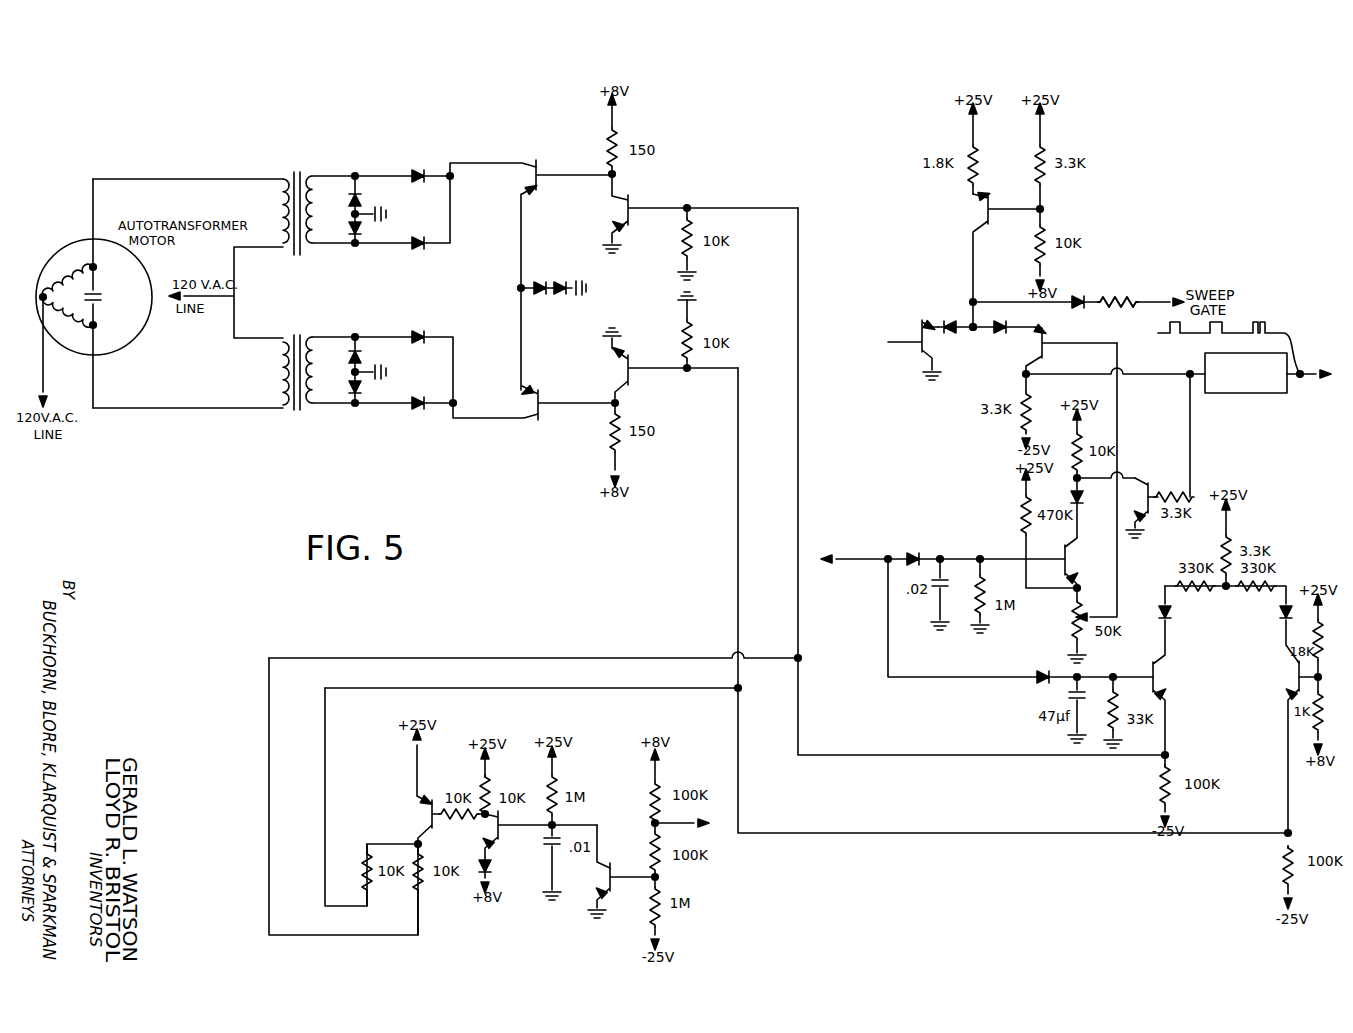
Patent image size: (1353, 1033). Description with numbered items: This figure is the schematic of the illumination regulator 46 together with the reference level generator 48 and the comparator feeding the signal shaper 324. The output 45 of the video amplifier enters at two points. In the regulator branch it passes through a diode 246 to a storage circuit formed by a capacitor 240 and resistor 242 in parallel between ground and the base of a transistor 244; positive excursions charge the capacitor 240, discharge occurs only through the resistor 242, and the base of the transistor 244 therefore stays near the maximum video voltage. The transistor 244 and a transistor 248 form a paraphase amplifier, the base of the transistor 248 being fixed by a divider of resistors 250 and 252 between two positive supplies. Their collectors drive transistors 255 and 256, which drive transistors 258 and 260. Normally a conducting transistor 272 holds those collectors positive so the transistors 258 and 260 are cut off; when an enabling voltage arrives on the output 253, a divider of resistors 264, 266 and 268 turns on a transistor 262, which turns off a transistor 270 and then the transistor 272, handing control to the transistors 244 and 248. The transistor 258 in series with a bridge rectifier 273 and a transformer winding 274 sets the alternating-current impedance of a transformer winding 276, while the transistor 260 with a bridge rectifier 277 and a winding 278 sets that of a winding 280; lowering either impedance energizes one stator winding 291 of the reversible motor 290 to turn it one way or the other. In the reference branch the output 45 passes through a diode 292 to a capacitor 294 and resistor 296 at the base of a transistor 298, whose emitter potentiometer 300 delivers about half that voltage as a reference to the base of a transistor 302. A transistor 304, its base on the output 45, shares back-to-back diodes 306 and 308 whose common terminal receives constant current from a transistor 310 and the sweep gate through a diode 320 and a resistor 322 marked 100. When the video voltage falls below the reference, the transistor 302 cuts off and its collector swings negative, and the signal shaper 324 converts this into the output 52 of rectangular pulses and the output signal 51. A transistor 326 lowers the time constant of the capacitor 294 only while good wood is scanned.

The motor 290 is at (42, 280).
The stator winding 291 is at (72, 270).
The transformer winding 276 is at (279, 192).
The transformer winding 280 is at (279, 374).
The bridge rectifier 273 is at (318, 245).
The transformer winding 274 is at (314, 208).
The bridge rectifier 277 is at (318, 405).
The transformer winding 278 is at (314, 372).
The transistor 258 is at (540, 167).
The transistor 260 is at (542, 412).
The transistor 255 is at (620, 209).
The transistor 256 is at (620, 372).
The transistor 272 is at (428, 812).
The transistor 270 is at (494, 831).
The transistor 262 is at (605, 878).
The resistor 264 is at (656, 792).
The resistor 266 is at (656, 846).
The resistor 268 is at (661, 882).
The output of the and gate 253 is at (670, 826).
The transistor 310 is at (984, 208).
The transistor 304 is at (919, 337).
The diode 306 is at (956, 321).
The diode 308 is at (1002, 325).
The transistor 302 is at (1046, 336).
The diode 320 is at (1078, 296).
The resistor 322 is at (1118, 308).
The resistor 100 is at (1118, 292).
The reference level generator 48 is at (1126, 257).
The output of the signal shaper 52 is at (1240, 333).
The output signal 51 is at (1302, 382).
The signal shaper 324 is at (1247, 395).
The transistor 326 is at (1151, 481).
The diode 292 is at (910, 553).
The capacitor 294 is at (946, 586).
The resistor 296 is at (984, 586).
The transistor 298 is at (1072, 556).
The potentiometer 300 is at (1073, 616).
The output of the video amplifier 45 is at (866, 564).
The illumination regulator 46 is at (878, 848).
The diode 246 is at (1046, 672).
The capacitor 240 is at (1069, 697).
The resistor 242 is at (1118, 708).
The transistor 244 is at (1180, 670).
The transistor 248 is at (1295, 678).
The resistor 250 is at (1292, 646).
The resistor 252 is at (1312, 716).